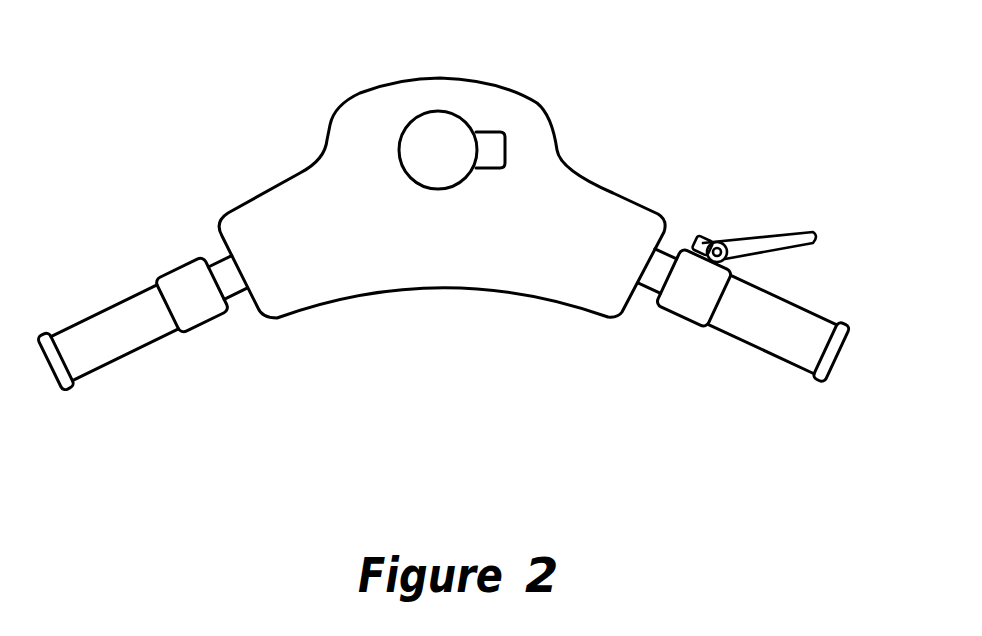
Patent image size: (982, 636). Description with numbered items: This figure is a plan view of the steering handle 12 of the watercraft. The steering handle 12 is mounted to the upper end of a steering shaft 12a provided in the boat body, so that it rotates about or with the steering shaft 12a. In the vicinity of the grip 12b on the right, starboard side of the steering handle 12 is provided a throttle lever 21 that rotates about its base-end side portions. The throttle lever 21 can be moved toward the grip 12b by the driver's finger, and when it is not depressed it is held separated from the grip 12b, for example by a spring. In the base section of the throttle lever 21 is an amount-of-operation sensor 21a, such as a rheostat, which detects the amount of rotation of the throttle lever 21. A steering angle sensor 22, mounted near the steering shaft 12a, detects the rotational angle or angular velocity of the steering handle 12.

The steering handle 12 is at (623, 170).
The steering shaft 12a is at (443, 112).
The grip 12b is at (815, 327).
The throttle lever 21 is at (815, 237).
The amount-of-operation sensor 21a is at (706, 242).
The steering angle sensor 22 is at (506, 137).